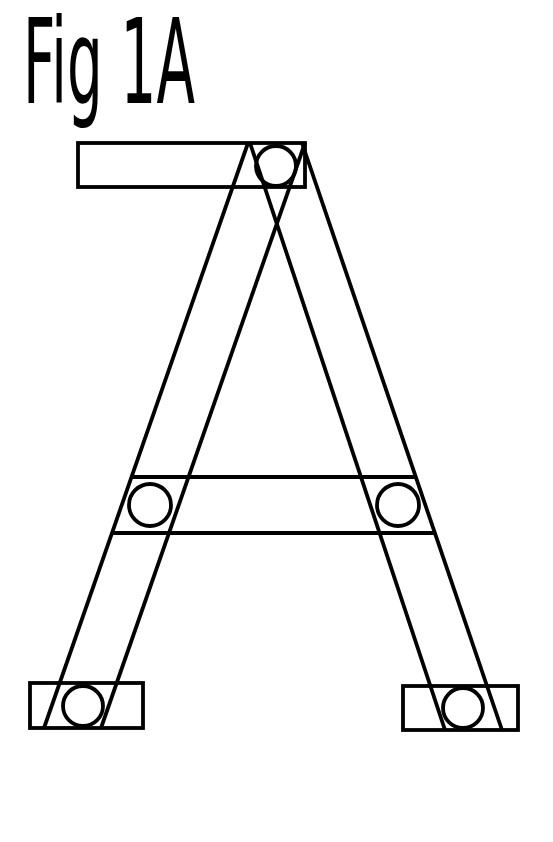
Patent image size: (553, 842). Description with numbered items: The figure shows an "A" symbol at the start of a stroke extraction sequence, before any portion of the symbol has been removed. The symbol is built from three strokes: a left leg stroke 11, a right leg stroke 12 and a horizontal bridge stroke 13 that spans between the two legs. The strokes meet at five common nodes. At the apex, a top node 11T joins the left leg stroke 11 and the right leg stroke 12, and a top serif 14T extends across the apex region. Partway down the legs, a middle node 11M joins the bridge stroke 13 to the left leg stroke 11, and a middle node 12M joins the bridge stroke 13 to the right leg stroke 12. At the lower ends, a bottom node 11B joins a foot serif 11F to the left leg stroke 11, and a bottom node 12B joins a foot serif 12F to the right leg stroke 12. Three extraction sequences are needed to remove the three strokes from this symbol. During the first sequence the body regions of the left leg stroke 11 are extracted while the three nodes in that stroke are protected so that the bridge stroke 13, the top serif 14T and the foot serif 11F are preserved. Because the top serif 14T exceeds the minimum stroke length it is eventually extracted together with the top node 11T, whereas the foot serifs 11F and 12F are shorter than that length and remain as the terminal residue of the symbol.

The left leg stroke 11 is at (180, 415).
The right leg stroke 12 is at (362, 415).
The horizontal bridge stroke 13 is at (295, 502).
The top serif 14T is at (187, 168).
The top node 11T is at (275, 160).
The middle node 11M is at (147, 515).
The middle node 12M is at (398, 517).
The bottom node 11B is at (84, 697).
The bottom node 12B is at (465, 698).
The foot serif 11F is at (132, 720).
The foot serif 12F is at (418, 722).